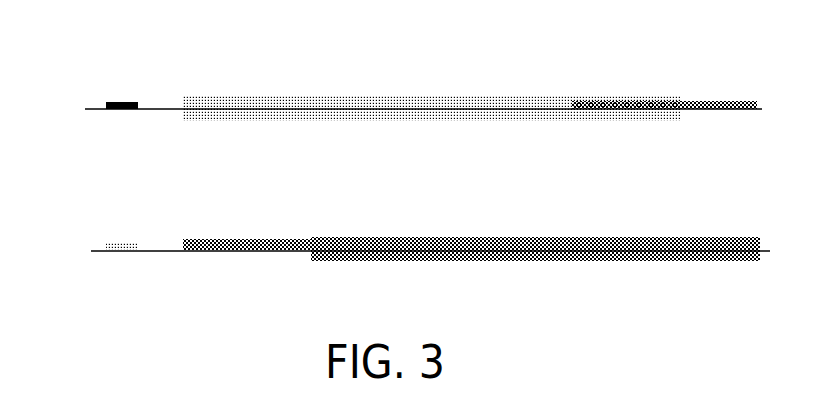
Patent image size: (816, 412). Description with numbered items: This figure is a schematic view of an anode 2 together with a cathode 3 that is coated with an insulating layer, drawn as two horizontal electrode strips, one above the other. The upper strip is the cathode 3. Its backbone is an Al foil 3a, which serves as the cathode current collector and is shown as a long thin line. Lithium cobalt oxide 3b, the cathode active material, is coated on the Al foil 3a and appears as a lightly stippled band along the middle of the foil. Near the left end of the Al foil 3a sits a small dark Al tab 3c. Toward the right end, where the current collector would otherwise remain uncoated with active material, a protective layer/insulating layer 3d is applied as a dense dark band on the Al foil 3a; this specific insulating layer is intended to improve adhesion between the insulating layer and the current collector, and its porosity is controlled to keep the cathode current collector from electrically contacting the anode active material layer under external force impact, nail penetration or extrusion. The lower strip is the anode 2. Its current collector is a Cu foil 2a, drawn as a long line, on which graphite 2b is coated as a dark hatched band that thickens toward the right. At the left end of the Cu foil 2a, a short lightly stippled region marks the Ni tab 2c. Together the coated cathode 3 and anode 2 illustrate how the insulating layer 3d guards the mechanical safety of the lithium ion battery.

The cathode 3 is at (60, 50).
The Al foil 3a is at (162, 107).
The lithium cobalt oxide 3b is at (420, 118).
The Al tab 3c is at (120, 98).
The protective layer/insulating layer 3d is at (612, 102).
The anode 2 is at (60, 202).
The Cu foil 2a is at (164, 256).
The graphite 2b is at (357, 253).
The Ni tab 2c is at (112, 238).